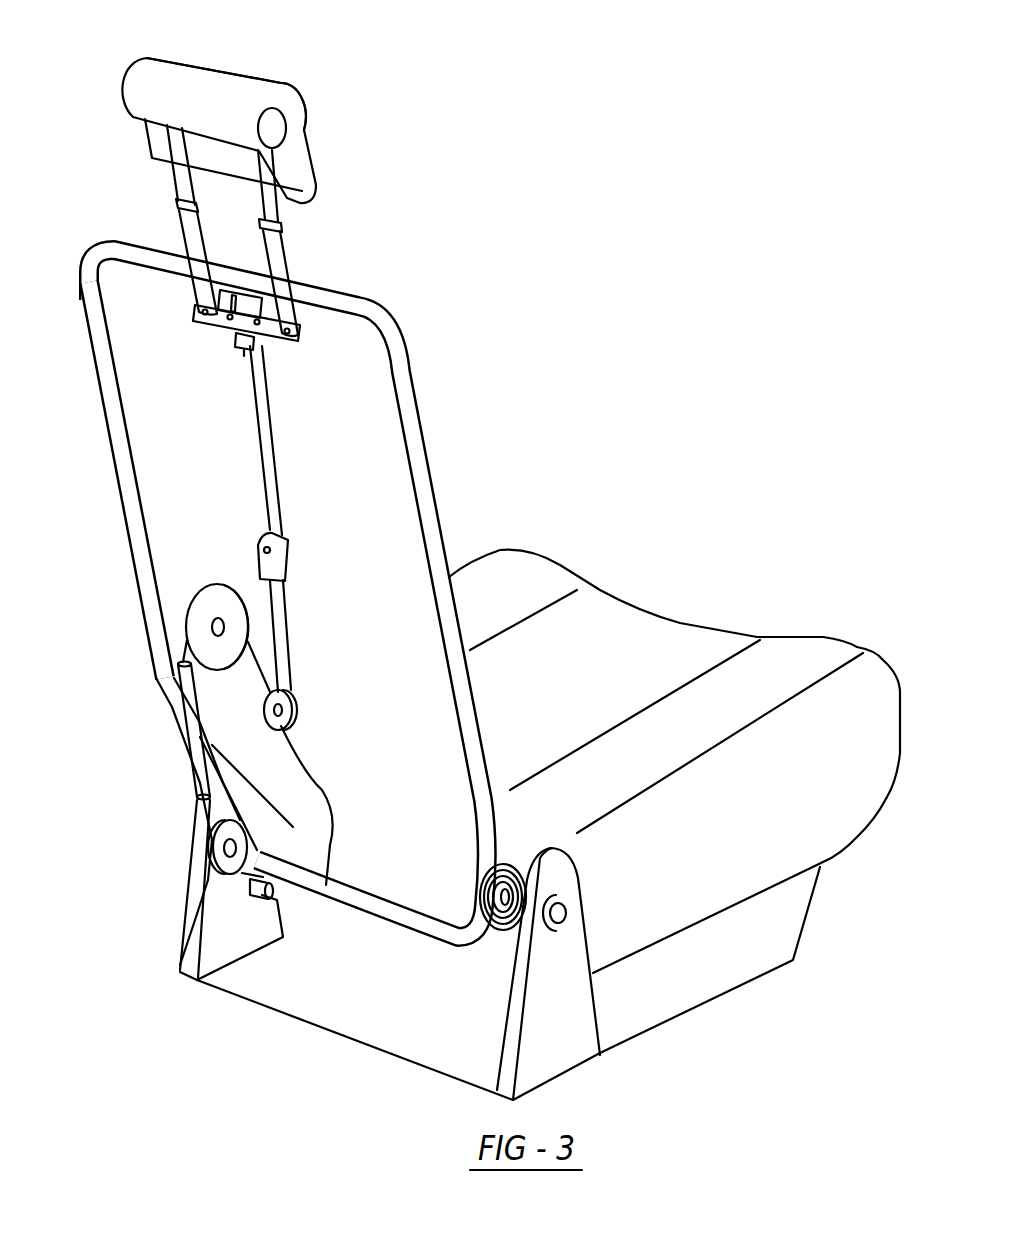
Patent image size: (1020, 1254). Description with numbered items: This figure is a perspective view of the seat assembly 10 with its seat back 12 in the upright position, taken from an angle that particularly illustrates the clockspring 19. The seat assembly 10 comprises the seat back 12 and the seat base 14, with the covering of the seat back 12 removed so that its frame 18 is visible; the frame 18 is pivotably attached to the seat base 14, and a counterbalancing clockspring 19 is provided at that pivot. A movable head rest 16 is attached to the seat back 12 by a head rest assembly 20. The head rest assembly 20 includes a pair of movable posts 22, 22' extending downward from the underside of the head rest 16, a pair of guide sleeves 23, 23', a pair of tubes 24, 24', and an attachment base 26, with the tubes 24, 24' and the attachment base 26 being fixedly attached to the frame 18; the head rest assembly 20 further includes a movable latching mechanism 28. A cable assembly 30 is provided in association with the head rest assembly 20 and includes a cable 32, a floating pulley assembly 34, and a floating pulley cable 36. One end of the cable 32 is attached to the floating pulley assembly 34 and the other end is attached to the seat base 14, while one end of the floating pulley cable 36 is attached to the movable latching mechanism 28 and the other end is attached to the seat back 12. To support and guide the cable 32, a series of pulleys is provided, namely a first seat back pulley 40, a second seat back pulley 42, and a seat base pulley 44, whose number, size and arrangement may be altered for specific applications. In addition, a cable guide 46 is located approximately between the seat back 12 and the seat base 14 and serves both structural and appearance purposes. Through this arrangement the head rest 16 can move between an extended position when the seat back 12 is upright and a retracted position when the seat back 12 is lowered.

The seat assembly 10 is at (500, 768).
The seat back 12 is at (114, 480).
The seat base 14 is at (674, 747).
The head rest 16 is at (225, 97).
The frame 18 is at (282, 593).
The clockspring 19 is at (486, 968).
The head rest assembly 20 is at (295, 130).
The movable post 22 is at (333, 198).
The movable post 22' is at (144, 142).
The guide sleeve 23 is at (308, 231).
The guide sleeve 23' is at (145, 179).
The tube 24 is at (350, 283).
The tube 24' is at (155, 245).
The attachment base 26 is at (347, 318).
The movable latching mechanism 28 is at (287, 394).
The cable assembly 30 is at (302, 595).
The cable 32 is at (314, 636).
The floating pulley assembly 34 is at (307, 566).
The floating pulley cable 36 is at (238, 440).
The first seat back pulley 40 is at (308, 758).
The second seat back pulley 42 is at (207, 604).
The seat base pulley 44 is at (151, 832).
The cable guide 46 is at (250, 833).